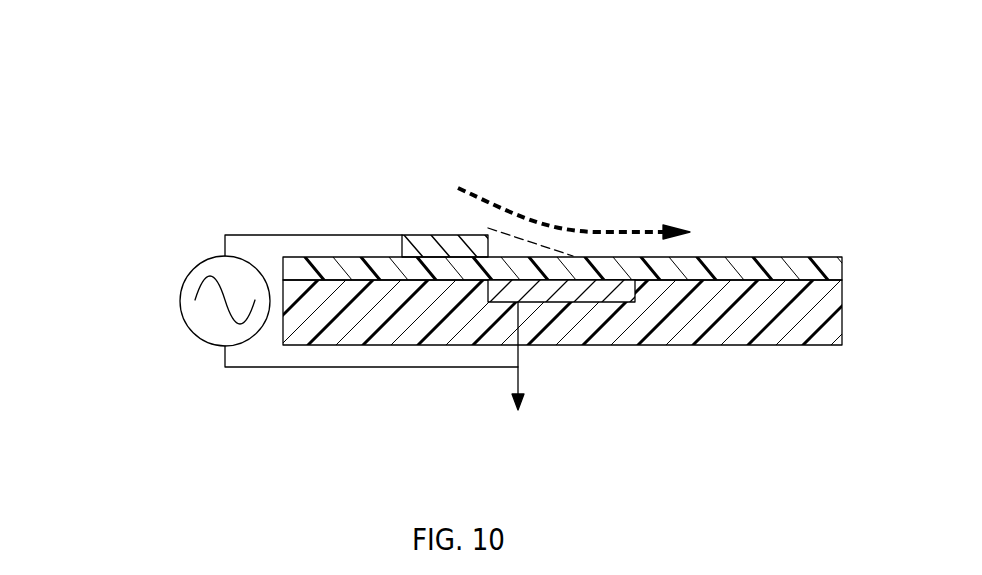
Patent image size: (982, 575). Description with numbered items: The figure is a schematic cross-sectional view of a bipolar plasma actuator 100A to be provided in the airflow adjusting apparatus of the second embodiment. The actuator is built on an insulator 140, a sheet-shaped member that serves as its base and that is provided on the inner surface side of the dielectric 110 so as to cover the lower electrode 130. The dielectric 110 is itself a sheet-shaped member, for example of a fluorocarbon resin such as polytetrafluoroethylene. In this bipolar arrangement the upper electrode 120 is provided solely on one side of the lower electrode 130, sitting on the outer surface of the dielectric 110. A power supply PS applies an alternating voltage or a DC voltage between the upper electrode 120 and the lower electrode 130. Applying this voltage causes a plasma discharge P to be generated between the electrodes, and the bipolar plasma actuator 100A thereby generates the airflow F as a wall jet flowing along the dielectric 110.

The bipolar plasma actuator 100A is at (342, 135).
The dielectric 110 is at (743, 258).
The upper electrode 120 is at (438, 235).
The lower electrode 130 is at (585, 298).
The insulator 140 is at (697, 344).
The power supply PS is at (195, 272).
The plasma discharge P is at (525, 230).
The airflow F is at (617, 230).